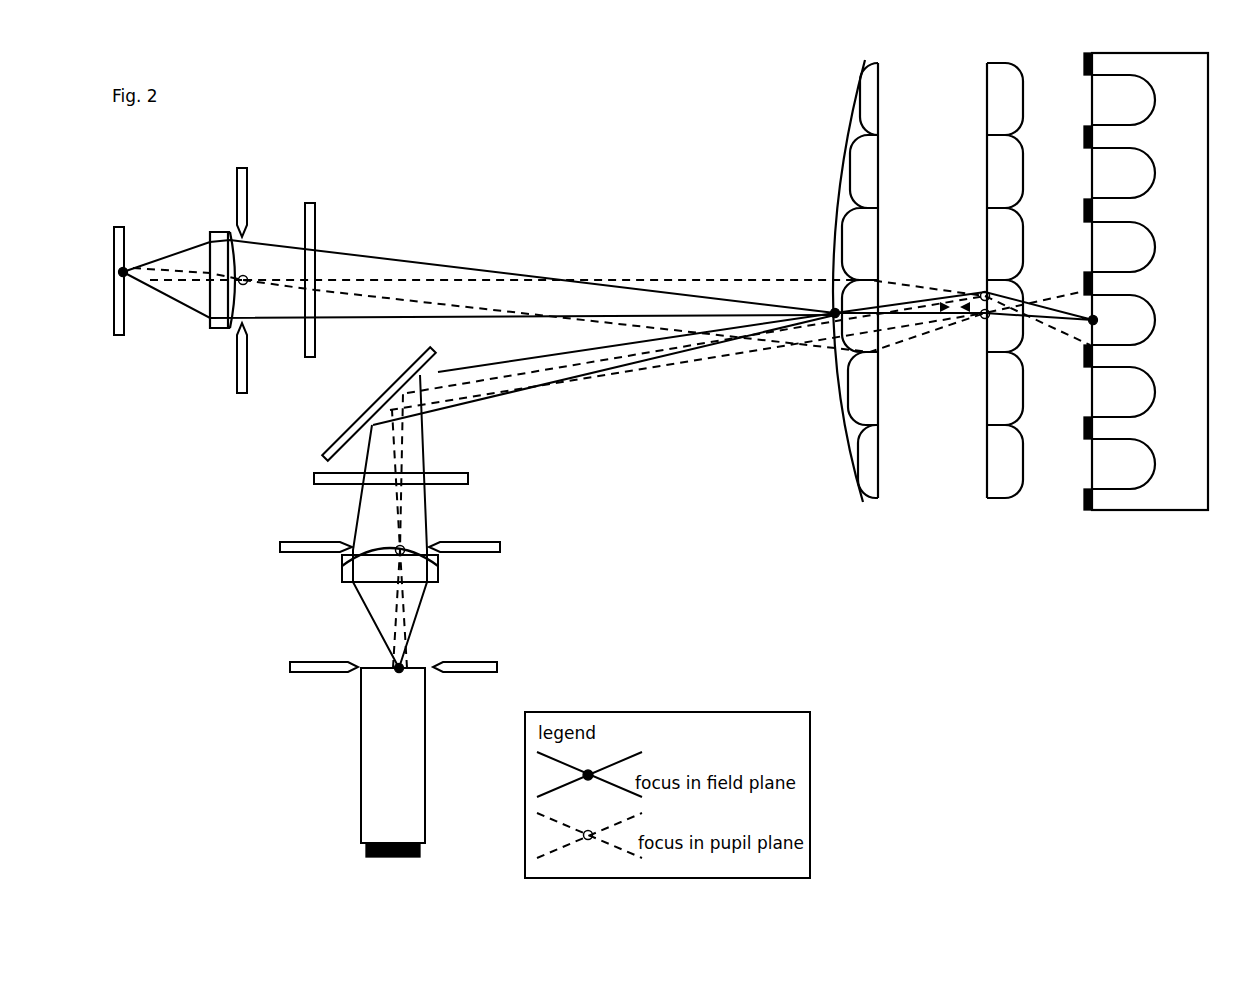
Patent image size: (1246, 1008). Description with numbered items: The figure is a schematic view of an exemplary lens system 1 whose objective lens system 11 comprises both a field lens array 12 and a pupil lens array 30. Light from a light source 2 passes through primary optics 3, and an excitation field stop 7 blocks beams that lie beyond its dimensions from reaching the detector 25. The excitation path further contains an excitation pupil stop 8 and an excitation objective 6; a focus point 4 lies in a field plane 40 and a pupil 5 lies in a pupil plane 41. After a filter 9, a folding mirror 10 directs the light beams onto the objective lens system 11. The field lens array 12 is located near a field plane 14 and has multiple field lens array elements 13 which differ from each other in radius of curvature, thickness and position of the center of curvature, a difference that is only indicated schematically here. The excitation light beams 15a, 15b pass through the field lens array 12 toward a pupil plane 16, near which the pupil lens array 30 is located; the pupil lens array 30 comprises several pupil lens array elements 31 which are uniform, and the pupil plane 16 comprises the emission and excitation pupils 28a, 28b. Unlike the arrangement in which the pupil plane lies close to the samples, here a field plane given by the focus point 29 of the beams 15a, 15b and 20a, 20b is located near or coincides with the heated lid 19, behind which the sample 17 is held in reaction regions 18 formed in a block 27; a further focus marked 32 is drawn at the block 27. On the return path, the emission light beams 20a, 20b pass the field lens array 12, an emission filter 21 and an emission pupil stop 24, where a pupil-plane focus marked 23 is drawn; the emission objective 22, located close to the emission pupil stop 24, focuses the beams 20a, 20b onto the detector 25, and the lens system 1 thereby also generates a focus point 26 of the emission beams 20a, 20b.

The lens system 1 is at (186, 790).
The light source 2 is at (393, 864).
The primary optics 3 is at (393, 755).
The focus point 4 is at (397, 669).
The pupil 5 is at (438, 565).
The excitation objective 6 is at (342, 565).
The excitation field stop 7 is at (392, 667).
The excitation pupil stop 8 is at (392, 548).
The filter 9 is at (470, 479).
The folding mirror 10 is at (350, 426).
The objective lens system 11 is at (908, 351).
The field lens array 12 is at (881, 300).
The field lens array elements 13 is at (870, 102).
The field plane 14 is at (845, 460).
The excitation light beam 15a is at (353, 509).
The excitation light beam 15b is at (430, 509).
The pupil plane 16 is at (987, 646).
The sample 17 is at (1125, 455).
The reaction regions 18 is at (1148, 478).
The heated lid 19 is at (1088, 511).
The emission light beam 20a is at (418, 262).
The emission light beam 20b is at (348, 322).
The emission filter 21 is at (313, 198).
The emission objective 22 is at (220, 325).
The pupil plane focus 23 is at (246, 277).
The emission pupil stop 24 is at (240, 267).
The detector 25 is at (118, 228).
The focus point 26 is at (127, 268).
The block 27 is at (1154, 367).
The pupil 28a is at (975, 330).
The pupil 28b is at (976, 276).
The focus point 29 is at (832, 310).
The pupil lens array 30 is at (974, 352).
The pupil lens array elements 31 is at (1005, 103).
The field plane focus 32 is at (1095, 318).
The field plane 40 is at (594, 667).
The pupil plane 41 is at (603, 543).